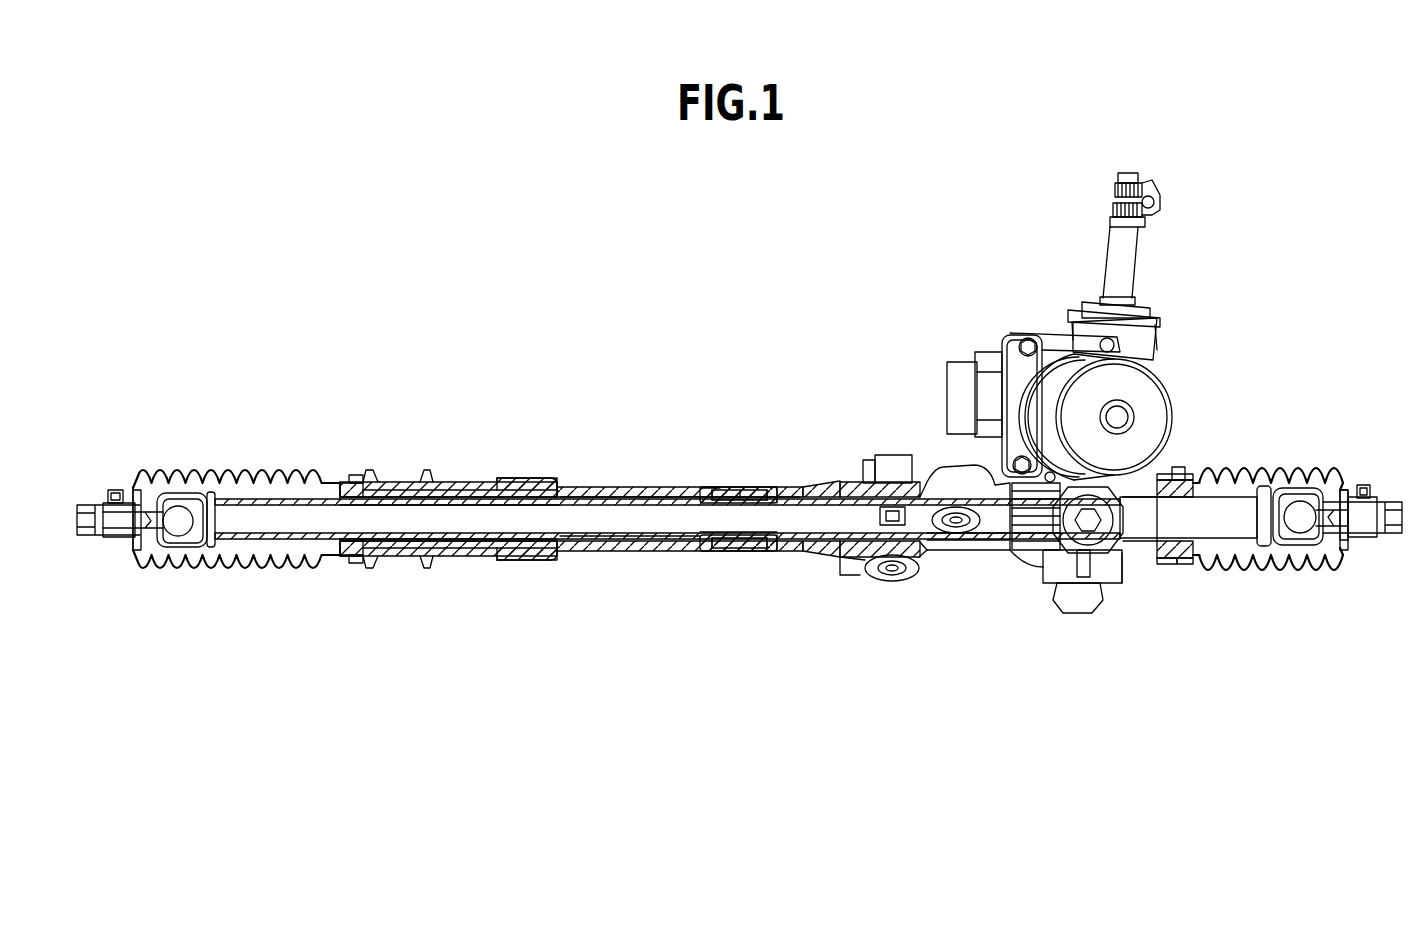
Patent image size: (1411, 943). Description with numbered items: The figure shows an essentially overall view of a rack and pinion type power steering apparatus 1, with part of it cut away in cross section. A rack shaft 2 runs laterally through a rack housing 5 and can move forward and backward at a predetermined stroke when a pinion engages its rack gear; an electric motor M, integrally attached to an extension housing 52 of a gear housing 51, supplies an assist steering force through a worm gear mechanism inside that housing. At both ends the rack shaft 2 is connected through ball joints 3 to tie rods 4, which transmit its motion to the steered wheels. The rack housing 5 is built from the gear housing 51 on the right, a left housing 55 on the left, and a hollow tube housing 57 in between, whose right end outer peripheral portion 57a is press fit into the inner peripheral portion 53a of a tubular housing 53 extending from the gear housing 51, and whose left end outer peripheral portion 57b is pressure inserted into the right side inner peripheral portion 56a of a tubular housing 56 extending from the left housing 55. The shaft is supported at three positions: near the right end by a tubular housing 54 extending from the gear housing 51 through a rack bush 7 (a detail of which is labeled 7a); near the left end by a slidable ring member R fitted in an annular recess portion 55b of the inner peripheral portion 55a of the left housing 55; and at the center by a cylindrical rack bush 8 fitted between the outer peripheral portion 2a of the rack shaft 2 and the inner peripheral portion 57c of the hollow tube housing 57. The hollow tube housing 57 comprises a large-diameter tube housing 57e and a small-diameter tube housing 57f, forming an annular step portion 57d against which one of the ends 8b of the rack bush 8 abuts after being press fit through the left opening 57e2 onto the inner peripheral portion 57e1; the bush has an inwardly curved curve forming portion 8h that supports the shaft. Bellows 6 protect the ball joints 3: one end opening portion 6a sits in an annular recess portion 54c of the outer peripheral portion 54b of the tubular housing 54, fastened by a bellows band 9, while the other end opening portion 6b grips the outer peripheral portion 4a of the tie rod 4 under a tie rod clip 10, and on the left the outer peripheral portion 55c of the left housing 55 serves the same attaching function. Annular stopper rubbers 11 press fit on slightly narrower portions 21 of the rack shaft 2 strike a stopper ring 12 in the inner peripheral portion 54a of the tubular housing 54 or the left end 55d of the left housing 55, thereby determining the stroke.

The rack and pinion type power steering apparatus 1 is at (676, 347).
The rack shaft 2 is at (585, 543).
The outer peripheral portion of the rack shaft 2a is at (630, 545).
The ball joints 3 is at (176, 548).
The tie rods 4 is at (86, 540).
The outer peripheral portion of the tie rod 4a is at (108, 536).
The rack housing 5 is at (669, 483).
The bellows 6 is at (215, 470).
The one end opening portion of the bellows 6a is at (312, 570).
The other end opening portion of the bellows 6b is at (132, 538).
The rack bush 7 is at (1143, 547).
The housing end portion 7a is at (338, 480).
The rack bush 8 is at (735, 540).
The ends of the rack bush 8b is at (708, 540).
The curve forming portion 8h is at (748, 542).
The bellows band 9 is at (355, 475).
The tie rod clip 10 is at (116, 490).
The annular stopper rubbers 11 is at (207, 548).
The stopper ring 12 is at (1150, 503).
The slightly narrower portions 21 is at (213, 548).
The gear housing 51 is at (1000, 555).
The extension housing 52 is at (950, 378).
The tubular housing 53 is at (840, 482).
The inner peripheral portion of the tubular housing 53a is at (858, 560).
The tubular housing 54 is at (1170, 558).
The inner peripheral portion of the tubular housing 54a is at (1160, 558).
The outer peripheral portion of the tubular housing 54b is at (1180, 472).
The annular recess portion 54c is at (1183, 560).
The left housing 55 is at (462, 482).
The inner peripheral portion of the left housing 55a is at (353, 557).
The annular recess portion 55b is at (346, 500).
The outer peripheral portion of the left housing 55c is at (345, 558).
The left end of the left housing 55d is at (327, 486).
The tubular housing 56 is at (512, 482).
The right side inner peripheral portion of the tubular housing 56a is at (548, 546).
The hollow tube housing 57 is at (623, 487).
The right end outer peripheral portion 57a is at (872, 483).
The left end outer peripheral portion 57b is at (532, 480).
The inner peripheral portion of the hollow tube housing 57c is at (688, 497).
The annular step portion 57d is at (768, 497).
The large-diameter tube housing 57e is at (705, 497).
The inner peripheral portion of the large-diameter tube housing 57e1 is at (715, 540).
The left opening 57e2 is at (497, 556).
The small-diameter tube housing 57f is at (795, 488).
The electric motor M is at (1092, 382).
The slidable ring member R is at (362, 505).